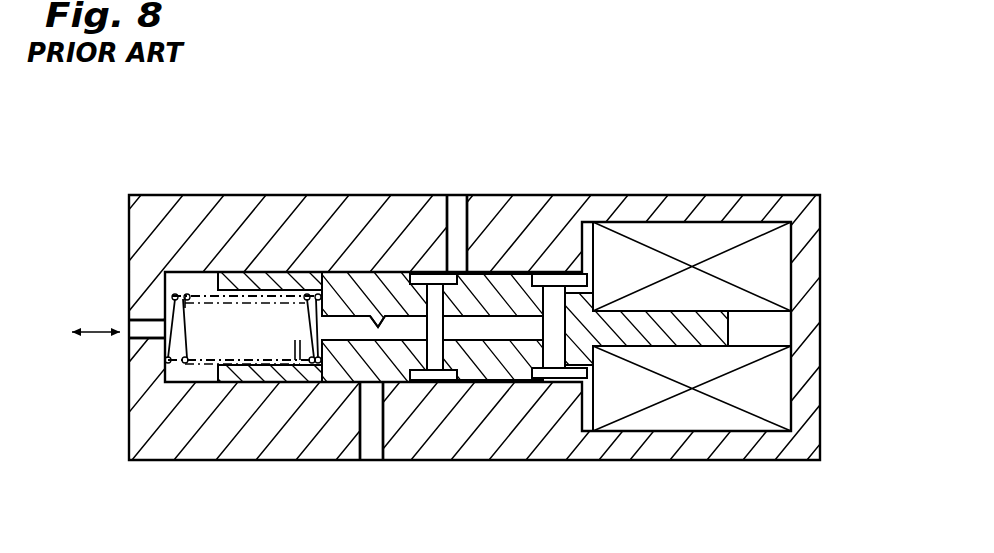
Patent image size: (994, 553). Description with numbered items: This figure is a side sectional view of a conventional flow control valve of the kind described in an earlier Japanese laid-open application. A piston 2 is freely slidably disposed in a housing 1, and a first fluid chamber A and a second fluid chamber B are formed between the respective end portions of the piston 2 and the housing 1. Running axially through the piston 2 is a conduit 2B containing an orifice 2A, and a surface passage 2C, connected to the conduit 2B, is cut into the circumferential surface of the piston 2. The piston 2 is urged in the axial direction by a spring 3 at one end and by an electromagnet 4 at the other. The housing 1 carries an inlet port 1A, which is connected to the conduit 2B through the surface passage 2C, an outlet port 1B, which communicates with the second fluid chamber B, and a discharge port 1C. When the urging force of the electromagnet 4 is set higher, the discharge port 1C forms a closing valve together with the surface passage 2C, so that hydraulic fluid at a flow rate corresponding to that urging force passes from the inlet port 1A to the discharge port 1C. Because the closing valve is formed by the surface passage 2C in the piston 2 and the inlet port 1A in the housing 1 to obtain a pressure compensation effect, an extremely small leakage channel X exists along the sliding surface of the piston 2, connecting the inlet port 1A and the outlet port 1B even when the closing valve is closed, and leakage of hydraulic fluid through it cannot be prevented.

The housing 1 is at (150, 212).
The inlet port 1A is at (623, 165).
The outlet port 1B is at (135, 331).
The discharge port 1C is at (378, 450).
The piston 2 is at (268, 276).
The orifice 2A is at (366, 333).
The conduit 2B is at (497, 333).
The surface passage 2C is at (428, 276).
The leakage channel X is at (372, 314).
The spring 3 is at (168, 372).
The first fluid chamber A is at (568, 378).
The second fluid chamber B is at (195, 372).
The electromagnet 4 is at (690, 420).